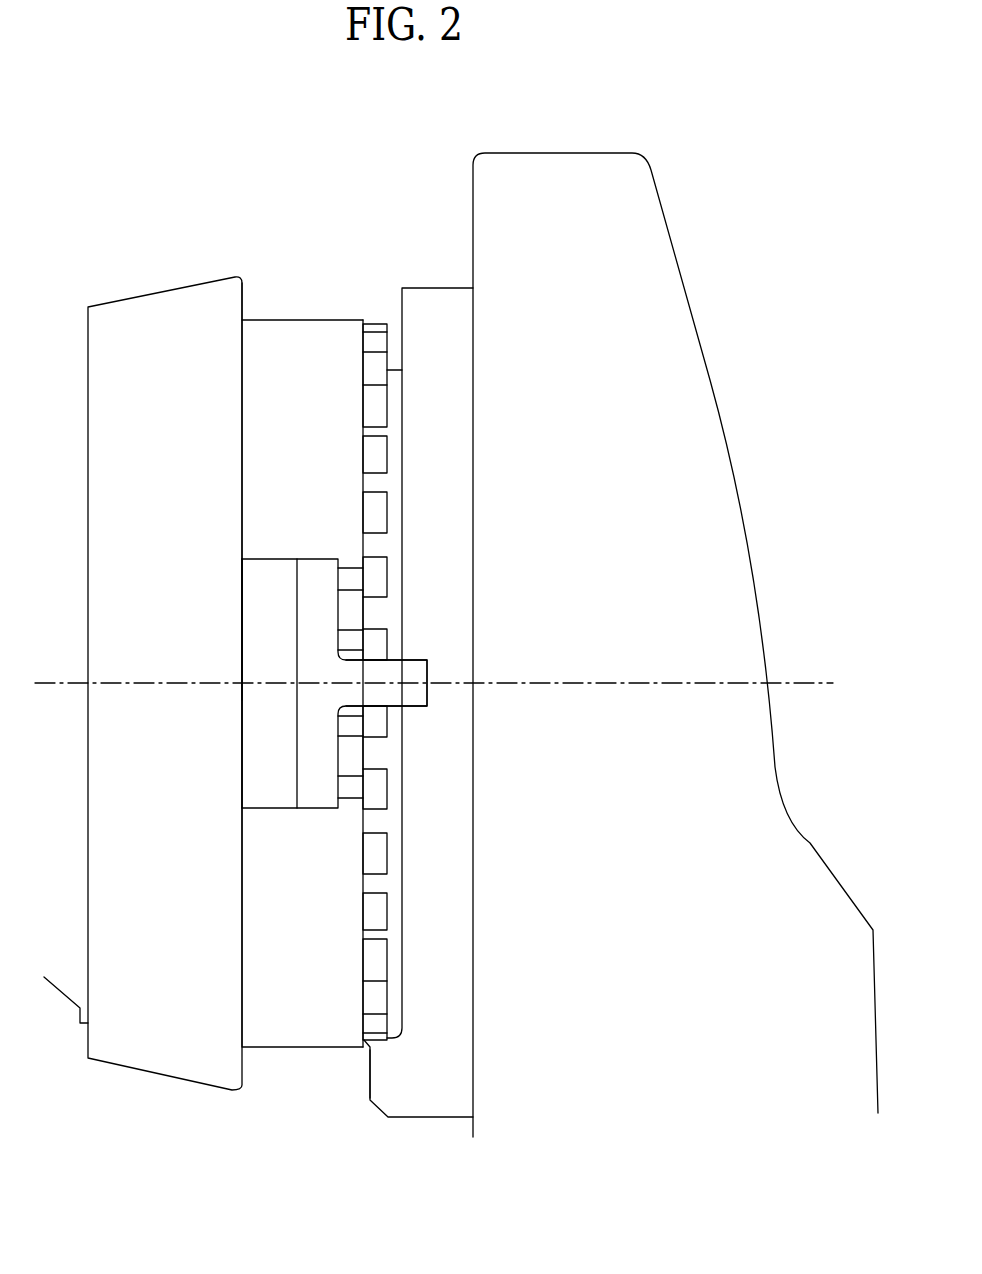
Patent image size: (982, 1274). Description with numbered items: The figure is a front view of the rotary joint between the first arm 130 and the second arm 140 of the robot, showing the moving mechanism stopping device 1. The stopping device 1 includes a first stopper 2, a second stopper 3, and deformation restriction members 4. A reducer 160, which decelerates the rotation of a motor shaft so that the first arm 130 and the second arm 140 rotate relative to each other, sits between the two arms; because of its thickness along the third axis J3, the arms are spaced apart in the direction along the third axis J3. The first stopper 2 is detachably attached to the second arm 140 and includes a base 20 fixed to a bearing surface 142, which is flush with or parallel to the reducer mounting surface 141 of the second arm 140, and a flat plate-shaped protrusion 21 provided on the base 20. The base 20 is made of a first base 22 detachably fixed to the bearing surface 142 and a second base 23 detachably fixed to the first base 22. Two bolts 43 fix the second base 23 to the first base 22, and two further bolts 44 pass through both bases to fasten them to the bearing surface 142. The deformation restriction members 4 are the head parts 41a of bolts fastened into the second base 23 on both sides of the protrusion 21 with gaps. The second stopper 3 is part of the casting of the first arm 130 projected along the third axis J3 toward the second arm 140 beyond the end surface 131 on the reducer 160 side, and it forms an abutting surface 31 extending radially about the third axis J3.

The moving mechanism stopping device 1 is at (507, 400).
The first stopper 2 is at (275, 540).
The second stopper 3 is at (367, 1114).
The deformation restriction members 4 is at (467, 665).
The base 20 is at (260, 828).
The protrusion 21 is at (427, 672).
The first base 22 is at (280, 810).
The second base 23 is at (321, 810).
The abutting surface 31 is at (368, 1072).
The head parts 41a is at (365, 640).
The bolts (third bolts) 43 is at (383, 605).
The bolts (third bolts) 44 is at (383, 572).
The first arm 130 is at (727, 377).
The end surface 131 is at (388, 957).
The second arm 140 is at (150, 276).
The reducer mounting surface 141 is at (242, 300).
The bearing surface 142 is at (245, 610).
The reducer 160 is at (316, 320).
The third axis J3 is at (800, 683).